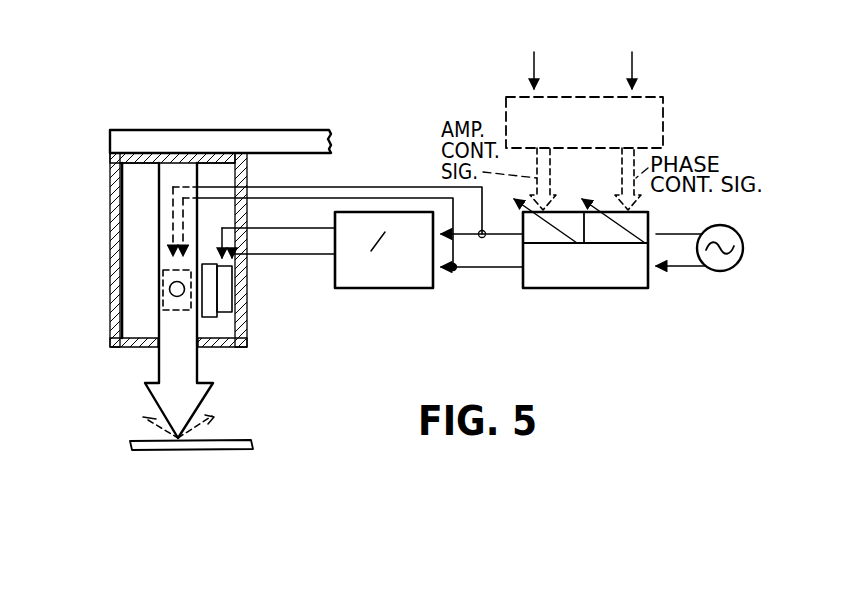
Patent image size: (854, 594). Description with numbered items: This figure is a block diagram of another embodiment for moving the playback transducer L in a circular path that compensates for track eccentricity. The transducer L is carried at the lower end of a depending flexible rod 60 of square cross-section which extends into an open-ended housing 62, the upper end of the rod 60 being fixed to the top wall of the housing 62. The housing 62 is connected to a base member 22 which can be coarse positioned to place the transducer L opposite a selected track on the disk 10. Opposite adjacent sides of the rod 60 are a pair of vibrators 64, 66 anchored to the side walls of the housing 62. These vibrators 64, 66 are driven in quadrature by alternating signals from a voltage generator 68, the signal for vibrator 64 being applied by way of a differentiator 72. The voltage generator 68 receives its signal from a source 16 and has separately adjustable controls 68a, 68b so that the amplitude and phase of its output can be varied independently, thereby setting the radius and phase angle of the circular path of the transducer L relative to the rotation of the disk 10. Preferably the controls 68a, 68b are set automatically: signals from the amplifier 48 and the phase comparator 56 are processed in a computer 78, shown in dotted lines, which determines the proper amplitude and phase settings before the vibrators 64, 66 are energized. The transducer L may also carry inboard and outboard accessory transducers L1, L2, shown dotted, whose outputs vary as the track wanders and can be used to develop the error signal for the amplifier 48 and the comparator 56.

The base member 22 is at (126, 138).
The housing 62 is at (117, 253).
The flexible rod 60 is at (167, 365).
The vibrator 66 is at (163, 303).
The vibrator 64 is at (215, 318).
The differentiator 72 is at (362, 283).
The computer 78 is at (663, 112).
The amplifier 48 is at (432, 53).
The phase comparator 56 is at (710, 53).
The voltage generator 68 is at (611, 253).
The amplitude control 68a is at (600, 182).
The phase control 68b is at (706, 222).
The source 16 is at (745, 237).
The playback transducer L is at (170, 397).
The inboard accessory transducer L1 is at (150, 421).
The outboard accessory transducer L2 is at (214, 417).
The disk 10 is at (223, 453).